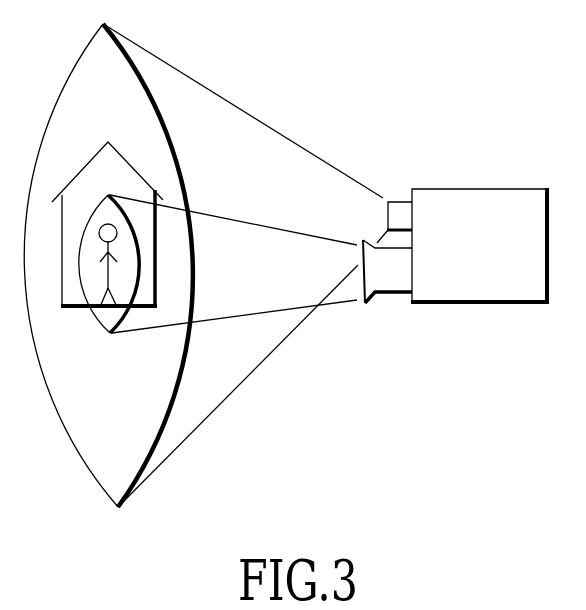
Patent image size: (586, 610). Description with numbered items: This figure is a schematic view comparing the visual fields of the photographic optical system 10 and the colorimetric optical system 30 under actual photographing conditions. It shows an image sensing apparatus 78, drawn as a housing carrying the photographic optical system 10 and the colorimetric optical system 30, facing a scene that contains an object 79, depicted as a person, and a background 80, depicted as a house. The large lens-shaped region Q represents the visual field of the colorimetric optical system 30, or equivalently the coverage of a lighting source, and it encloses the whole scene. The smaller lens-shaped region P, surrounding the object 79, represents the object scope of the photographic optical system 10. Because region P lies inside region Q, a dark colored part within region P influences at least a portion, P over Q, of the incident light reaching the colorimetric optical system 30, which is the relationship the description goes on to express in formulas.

The background 80 is at (133, 178).
The object 79 is at (118, 258).
The region P is at (106, 321).
The region Q is at (70, 426).
The colorimetric optical system 30 is at (398, 205).
The image sensing apparatus 78 is at (494, 192).
The photographic optical system 10 is at (393, 287).